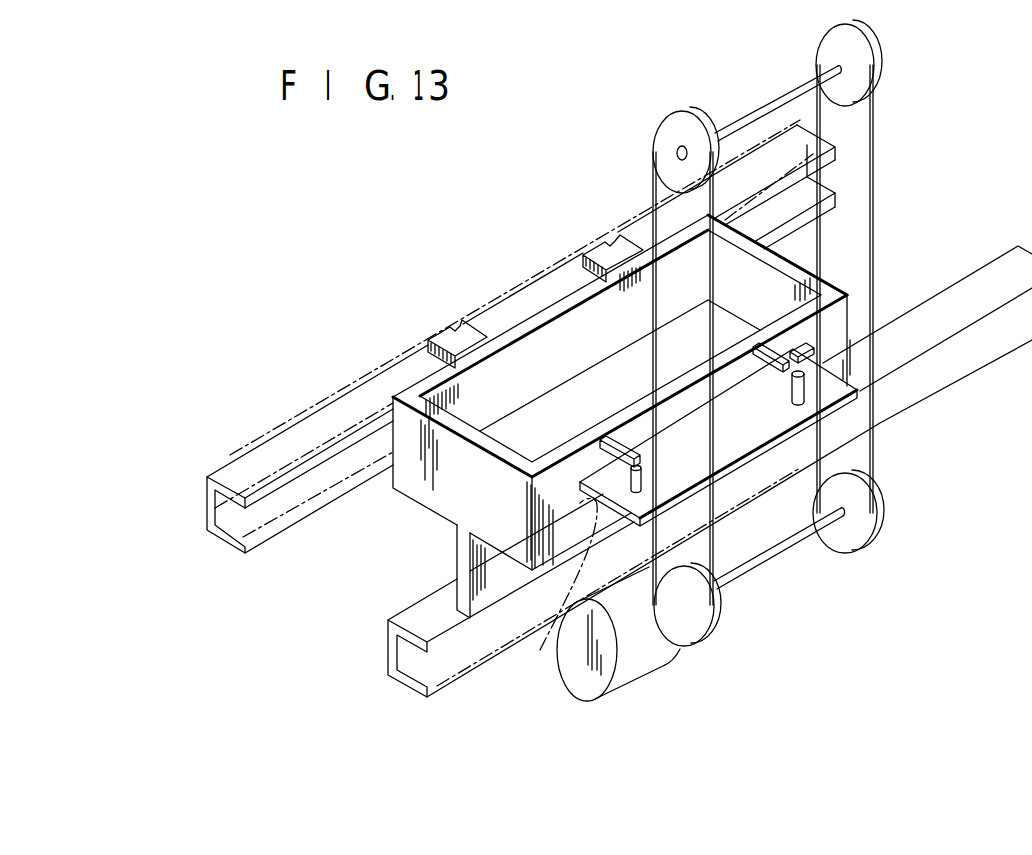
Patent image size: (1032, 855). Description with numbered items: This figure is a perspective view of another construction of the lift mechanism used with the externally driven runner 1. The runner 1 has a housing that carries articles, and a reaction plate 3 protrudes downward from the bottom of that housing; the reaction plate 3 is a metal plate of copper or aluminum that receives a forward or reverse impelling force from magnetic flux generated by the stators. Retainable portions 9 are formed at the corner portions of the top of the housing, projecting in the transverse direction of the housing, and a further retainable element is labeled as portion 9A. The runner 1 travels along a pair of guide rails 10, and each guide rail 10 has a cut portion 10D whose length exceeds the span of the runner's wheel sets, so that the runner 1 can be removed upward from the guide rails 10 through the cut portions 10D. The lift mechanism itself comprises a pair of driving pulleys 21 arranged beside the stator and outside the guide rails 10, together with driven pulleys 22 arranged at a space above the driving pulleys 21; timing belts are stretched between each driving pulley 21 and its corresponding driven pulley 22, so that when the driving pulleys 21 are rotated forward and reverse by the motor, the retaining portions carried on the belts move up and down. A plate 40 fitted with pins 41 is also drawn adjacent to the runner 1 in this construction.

The runner 1 is at (432, 500).
The reaction plate 3 is at (457, 565).
The retainable portions 9 is at (458, 332).
The positioning tab 9A is at (626, 446).
The guide rail 10 is at (207, 535).
The cut portion 10D is at (550, 586).
The driving pulleys 21 is at (700, 644).
The driven pulleys 22 is at (853, 50).
The plate 40 is at (722, 448).
The pins 41 is at (631, 479).